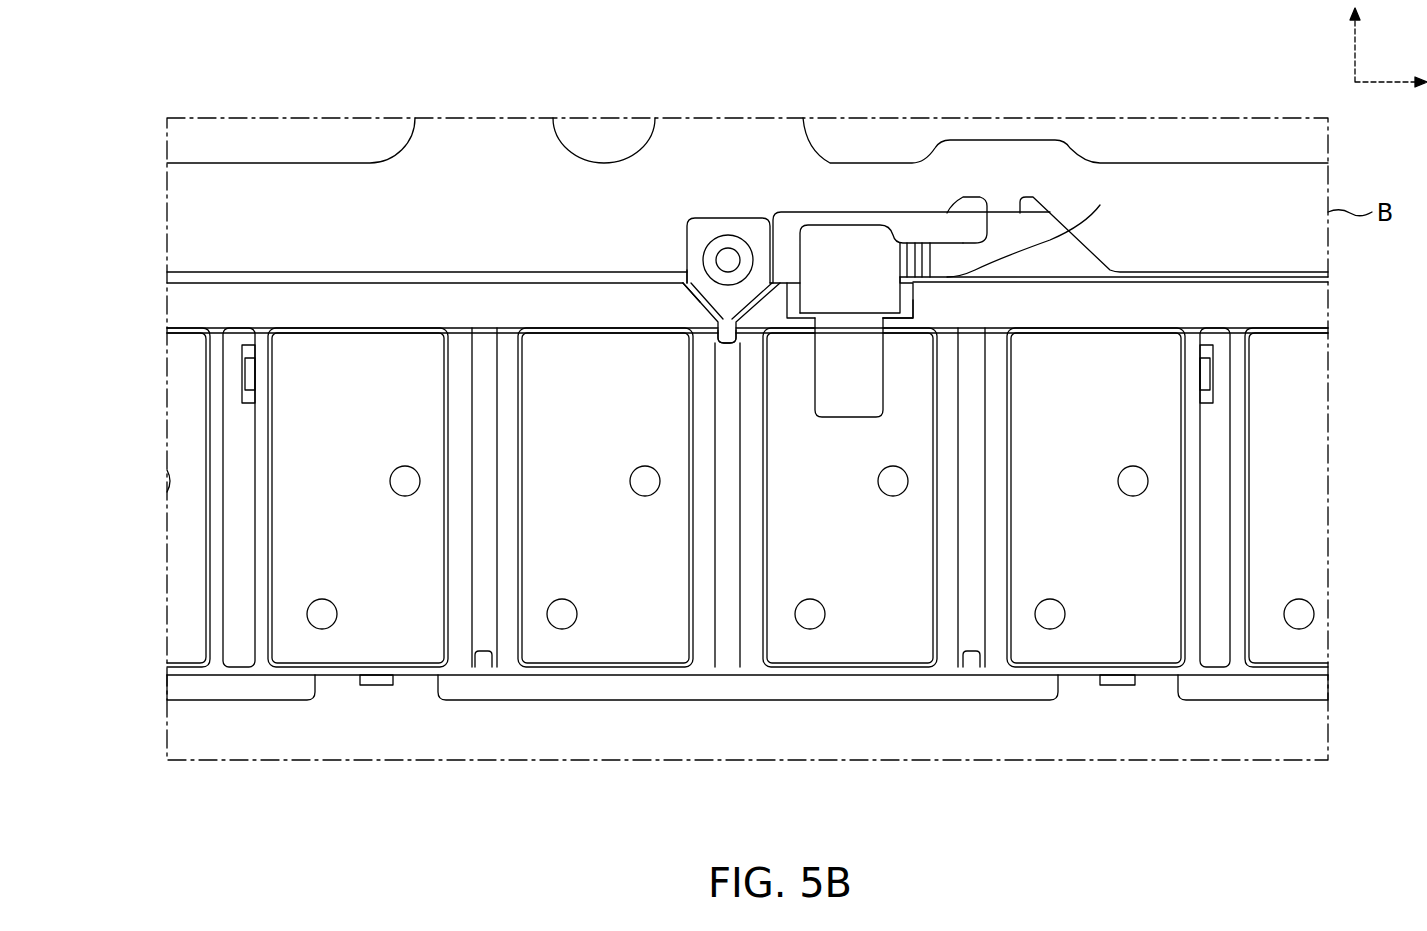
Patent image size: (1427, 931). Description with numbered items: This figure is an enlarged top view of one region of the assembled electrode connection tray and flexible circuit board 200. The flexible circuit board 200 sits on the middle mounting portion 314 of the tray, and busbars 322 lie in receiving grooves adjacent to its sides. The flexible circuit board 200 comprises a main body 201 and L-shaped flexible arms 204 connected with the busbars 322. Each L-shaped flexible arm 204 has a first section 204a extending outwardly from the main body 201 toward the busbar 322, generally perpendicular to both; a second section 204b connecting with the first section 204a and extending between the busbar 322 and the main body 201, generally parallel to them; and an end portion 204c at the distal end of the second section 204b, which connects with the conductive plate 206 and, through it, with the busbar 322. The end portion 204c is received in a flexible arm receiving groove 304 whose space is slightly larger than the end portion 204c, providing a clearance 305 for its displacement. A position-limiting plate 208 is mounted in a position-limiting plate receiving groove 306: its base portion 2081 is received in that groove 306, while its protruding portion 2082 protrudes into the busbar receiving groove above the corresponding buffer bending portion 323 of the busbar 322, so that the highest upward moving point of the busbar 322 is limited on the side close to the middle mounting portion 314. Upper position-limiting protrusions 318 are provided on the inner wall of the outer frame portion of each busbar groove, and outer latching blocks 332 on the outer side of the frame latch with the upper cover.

The flexible circuit board 200 is at (1233, 178).
The main body 201 is at (483, 182).
The L-shaped flexible arm 204 is at (1100, 205).
The first section 204a is at (1000, 227).
The second section 204b is at (943, 258).
The end portion 204c is at (835, 258).
The conductive plate 206 is at (862, 397).
The position-limiting plate 208 is at (703, 218).
The base portion 2081 is at (700, 282).
The protruding portion 2082 is at (727, 340).
The flexible arm receiving groove 304 is at (910, 313).
The clearance 305 is at (905, 302).
The position-limiting plate receiving groove 306 is at (697, 305).
The middle mounting portion 314 is at (345, 303).
The upper position-limiting protrusion 318 is at (483, 655).
The busbar 322 is at (790, 635).
The buffer bending portion 323 is at (485, 600).
The outer latching block 332 is at (375, 688).